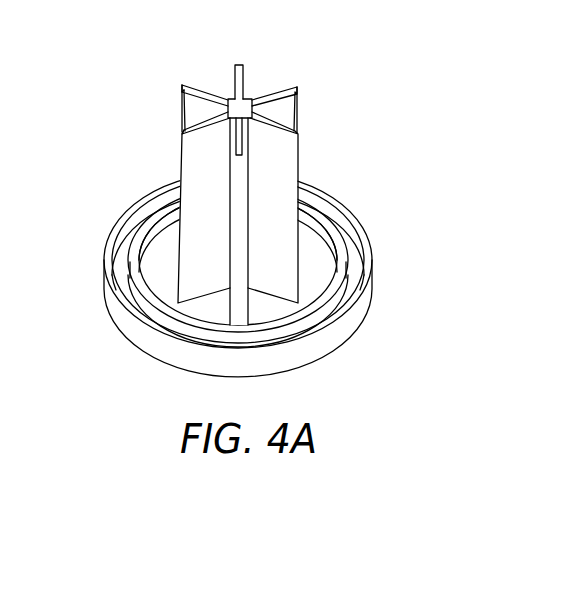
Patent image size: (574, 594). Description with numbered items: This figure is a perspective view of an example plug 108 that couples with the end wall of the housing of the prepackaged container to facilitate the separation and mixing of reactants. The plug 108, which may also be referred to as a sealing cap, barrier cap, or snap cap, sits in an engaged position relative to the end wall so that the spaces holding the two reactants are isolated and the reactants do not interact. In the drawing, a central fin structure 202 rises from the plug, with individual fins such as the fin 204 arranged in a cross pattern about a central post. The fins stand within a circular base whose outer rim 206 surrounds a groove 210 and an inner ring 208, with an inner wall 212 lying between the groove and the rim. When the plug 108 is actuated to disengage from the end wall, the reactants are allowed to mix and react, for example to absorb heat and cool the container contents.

The plug 108 is at (253, 205).
The fin member 202 is at (269, 179).
The fin 204 is at (278, 87).
The outer rim 206 is at (370, 203).
The inner ring 208 is at (132, 220).
The groove 210 is at (151, 205).
The inner wall 212 is at (362, 236).